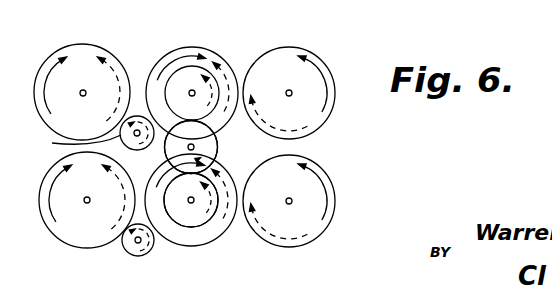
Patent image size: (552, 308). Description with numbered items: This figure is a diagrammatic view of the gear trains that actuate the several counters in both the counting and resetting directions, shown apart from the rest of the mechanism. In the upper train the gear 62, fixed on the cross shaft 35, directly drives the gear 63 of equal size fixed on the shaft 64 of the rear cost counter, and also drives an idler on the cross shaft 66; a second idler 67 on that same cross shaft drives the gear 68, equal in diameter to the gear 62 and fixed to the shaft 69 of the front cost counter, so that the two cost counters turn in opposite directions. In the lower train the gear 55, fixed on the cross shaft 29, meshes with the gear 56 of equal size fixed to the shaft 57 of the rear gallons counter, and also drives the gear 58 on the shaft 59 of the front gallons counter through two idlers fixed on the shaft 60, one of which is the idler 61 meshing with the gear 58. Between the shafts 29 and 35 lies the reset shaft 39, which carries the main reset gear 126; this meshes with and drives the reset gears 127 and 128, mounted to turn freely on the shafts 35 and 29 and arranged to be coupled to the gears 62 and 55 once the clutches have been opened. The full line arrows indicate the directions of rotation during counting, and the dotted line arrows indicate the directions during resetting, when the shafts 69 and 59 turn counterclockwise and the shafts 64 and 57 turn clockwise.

The gear 68 is at (73, 45).
The shaft of the front cost counter 69 is at (85, 96).
The idler 67 is at (76, 144).
The cross shaft 66 is at (138, 121).
The reset gear 127 is at (191, 90).
The cross shaft 35 is at (192, 90).
The gear 62 is at (221, 51).
The gear 63 is at (291, 47).
The shaft of the rear cost counter 64 is at (287, 96).
The shaft 39 is at (194, 146).
The main reset gear 126 is at (214, 153).
The gear 58 is at (72, 247).
The shaft of front gallons counter 59 is at (100, 184).
The idler 61 is at (126, 249).
The shaft 60 is at (140, 242).
The gear 55 is at (198, 247).
The cross shaft 29 is at (191, 203).
The reset gear 128 is at (205, 222).
The gear 56 is at (314, 236).
The shaft of the rear gallons counter 57 is at (286, 176).